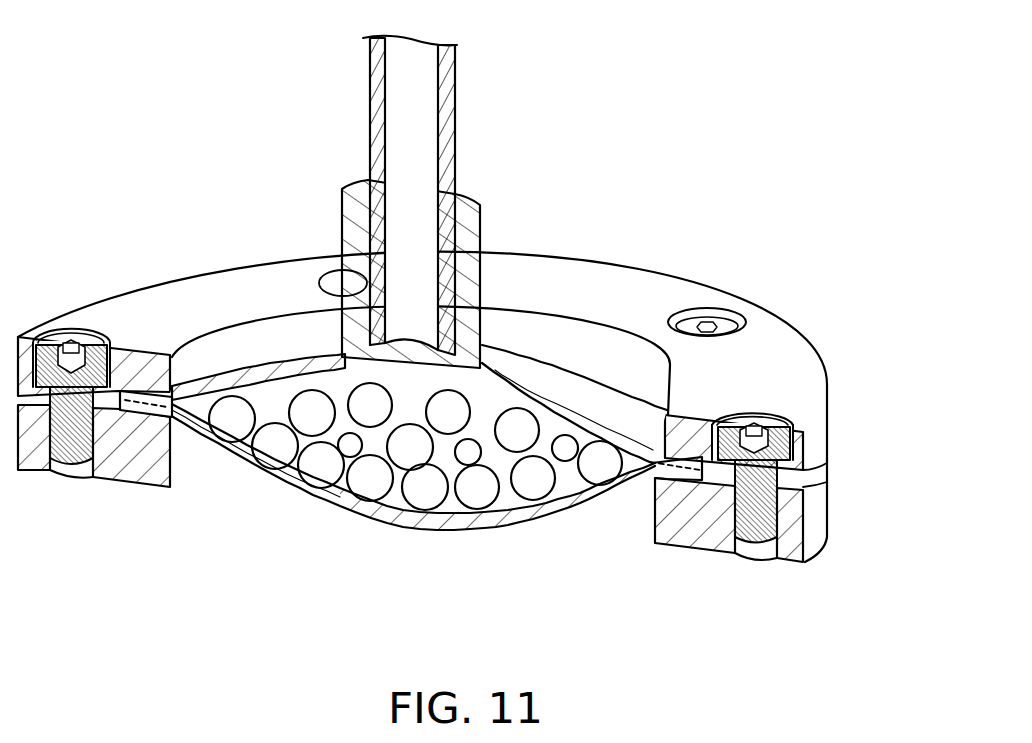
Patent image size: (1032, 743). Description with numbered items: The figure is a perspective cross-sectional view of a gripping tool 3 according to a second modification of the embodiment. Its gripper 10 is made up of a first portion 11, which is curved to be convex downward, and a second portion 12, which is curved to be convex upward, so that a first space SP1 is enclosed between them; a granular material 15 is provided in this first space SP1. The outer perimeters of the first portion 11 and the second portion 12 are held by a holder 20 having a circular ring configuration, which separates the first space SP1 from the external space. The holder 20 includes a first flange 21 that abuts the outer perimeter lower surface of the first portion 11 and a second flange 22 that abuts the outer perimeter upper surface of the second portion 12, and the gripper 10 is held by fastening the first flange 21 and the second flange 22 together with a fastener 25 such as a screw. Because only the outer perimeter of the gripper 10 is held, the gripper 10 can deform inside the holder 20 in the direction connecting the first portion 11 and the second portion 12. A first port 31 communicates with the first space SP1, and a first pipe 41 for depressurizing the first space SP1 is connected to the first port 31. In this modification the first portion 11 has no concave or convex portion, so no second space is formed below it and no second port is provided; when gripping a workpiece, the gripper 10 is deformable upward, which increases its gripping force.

The gripping tool 3 is at (476, 357).
The gripper 10 is at (411, 515).
The first portion 11 is at (417, 494).
The second portion 12 is at (553, 397).
The granular material 15 is at (275, 445).
The holder 20 is at (476, 407).
The first flange 21 is at (888, 420).
The second flange 22 is at (827, 431).
The fastener 25 is at (757, 527).
The first port 31 is at (335, 303).
The first pipe 41 is at (370, 125).
The first space SP1 is at (390, 497).